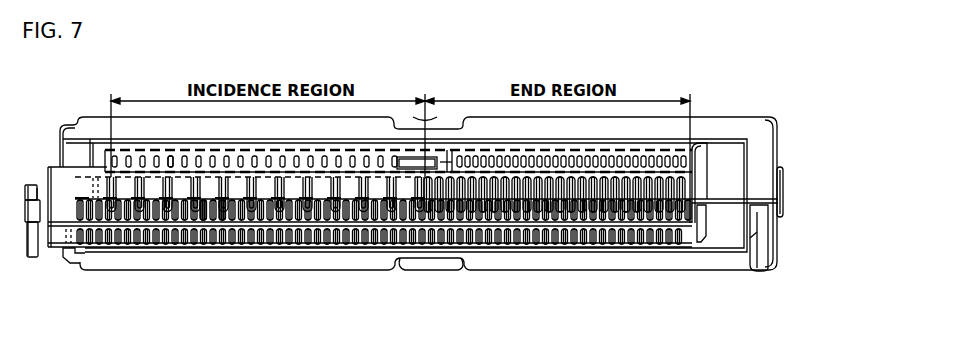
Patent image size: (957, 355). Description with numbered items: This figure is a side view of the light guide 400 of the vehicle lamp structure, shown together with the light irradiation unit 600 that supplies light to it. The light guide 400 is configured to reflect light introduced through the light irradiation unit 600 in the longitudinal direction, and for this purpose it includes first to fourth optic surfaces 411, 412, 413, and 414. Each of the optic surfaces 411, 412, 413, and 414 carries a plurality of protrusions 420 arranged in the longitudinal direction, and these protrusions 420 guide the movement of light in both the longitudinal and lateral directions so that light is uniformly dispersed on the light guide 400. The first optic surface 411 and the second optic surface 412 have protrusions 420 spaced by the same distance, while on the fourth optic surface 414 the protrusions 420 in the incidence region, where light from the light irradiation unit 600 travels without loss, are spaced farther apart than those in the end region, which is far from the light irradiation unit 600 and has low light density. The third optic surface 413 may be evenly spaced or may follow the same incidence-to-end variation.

The light guide 400 is at (855, 140).
The first optic surface 411 is at (675, 238).
The second optic surface 412 is at (697, 214).
The third optic surface 413 is at (693, 187).
The fourth optic surface 414 is at (690, 164).
The protrusions 420 is at (198, 238).
The light irradiation unit 600 is at (32, 259).